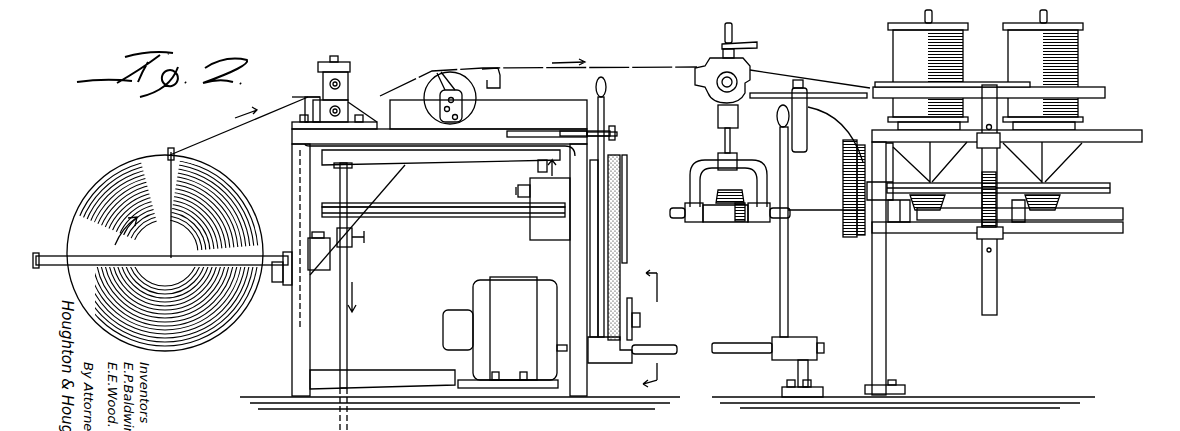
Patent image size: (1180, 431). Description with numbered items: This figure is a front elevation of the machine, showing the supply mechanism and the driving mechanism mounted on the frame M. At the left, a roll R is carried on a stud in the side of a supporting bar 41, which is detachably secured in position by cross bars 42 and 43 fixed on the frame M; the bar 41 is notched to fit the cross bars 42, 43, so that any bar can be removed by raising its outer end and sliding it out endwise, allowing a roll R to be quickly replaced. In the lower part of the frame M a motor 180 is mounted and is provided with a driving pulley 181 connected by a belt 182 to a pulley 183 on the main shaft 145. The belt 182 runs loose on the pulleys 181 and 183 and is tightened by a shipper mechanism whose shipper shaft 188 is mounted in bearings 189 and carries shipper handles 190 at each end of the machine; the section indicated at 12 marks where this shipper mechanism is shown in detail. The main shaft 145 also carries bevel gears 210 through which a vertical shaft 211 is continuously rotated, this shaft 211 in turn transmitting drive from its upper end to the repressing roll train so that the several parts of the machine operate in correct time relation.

The roll R is at (213, 192).
The supporting bar 41 is at (190, 258).
The cross bar 42 is at (284, 288).
The cross bar 43 is at (332, 240).
The frame M is at (299, 348).
The main shaft 145 is at (446, 212).
The motor 180 is at (478, 296).
The driving pulley 181 is at (627, 300).
The belt 182 is at (612, 200).
The pulley 183 is at (625, 176).
The shipper shaft 188 is at (653, 345).
The bearings 189 is at (800, 345).
The shipper handles 190 is at (606, 247).
The section line 12 is at (661, 332).
The bevel gears 210 is at (733, 222).
The vertical shaft 211 is at (731, 138).